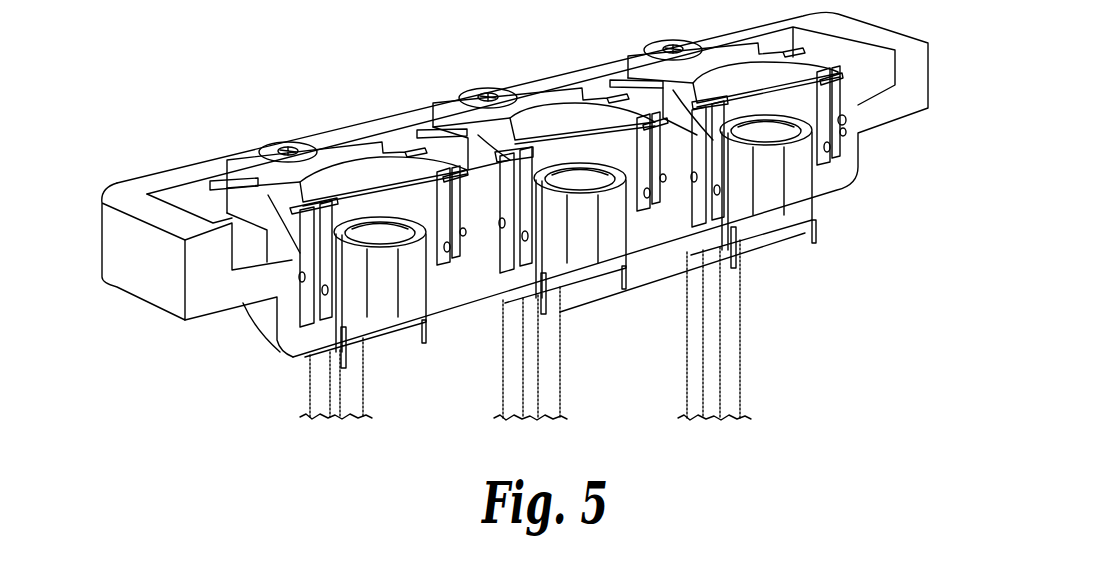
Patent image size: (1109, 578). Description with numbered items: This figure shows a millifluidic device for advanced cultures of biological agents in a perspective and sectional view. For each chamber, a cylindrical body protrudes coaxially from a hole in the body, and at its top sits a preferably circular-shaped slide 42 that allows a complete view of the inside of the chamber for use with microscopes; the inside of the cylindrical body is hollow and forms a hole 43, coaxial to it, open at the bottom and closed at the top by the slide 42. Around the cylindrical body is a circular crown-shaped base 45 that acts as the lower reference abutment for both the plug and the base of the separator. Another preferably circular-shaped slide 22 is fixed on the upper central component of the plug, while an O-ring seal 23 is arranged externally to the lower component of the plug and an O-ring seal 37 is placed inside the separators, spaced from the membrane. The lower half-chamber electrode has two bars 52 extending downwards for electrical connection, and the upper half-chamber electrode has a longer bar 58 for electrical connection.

The slide 22 is at (338, 182).
The O-ring seal 23 is at (848, 124).
The O-ring seal 37 is at (637, 198).
The slide 42 is at (762, 132).
The hole 43 is at (373, 300).
The base 45 is at (310, 338).
The bars 52 is at (425, 330).
The bar 58 is at (418, 127).